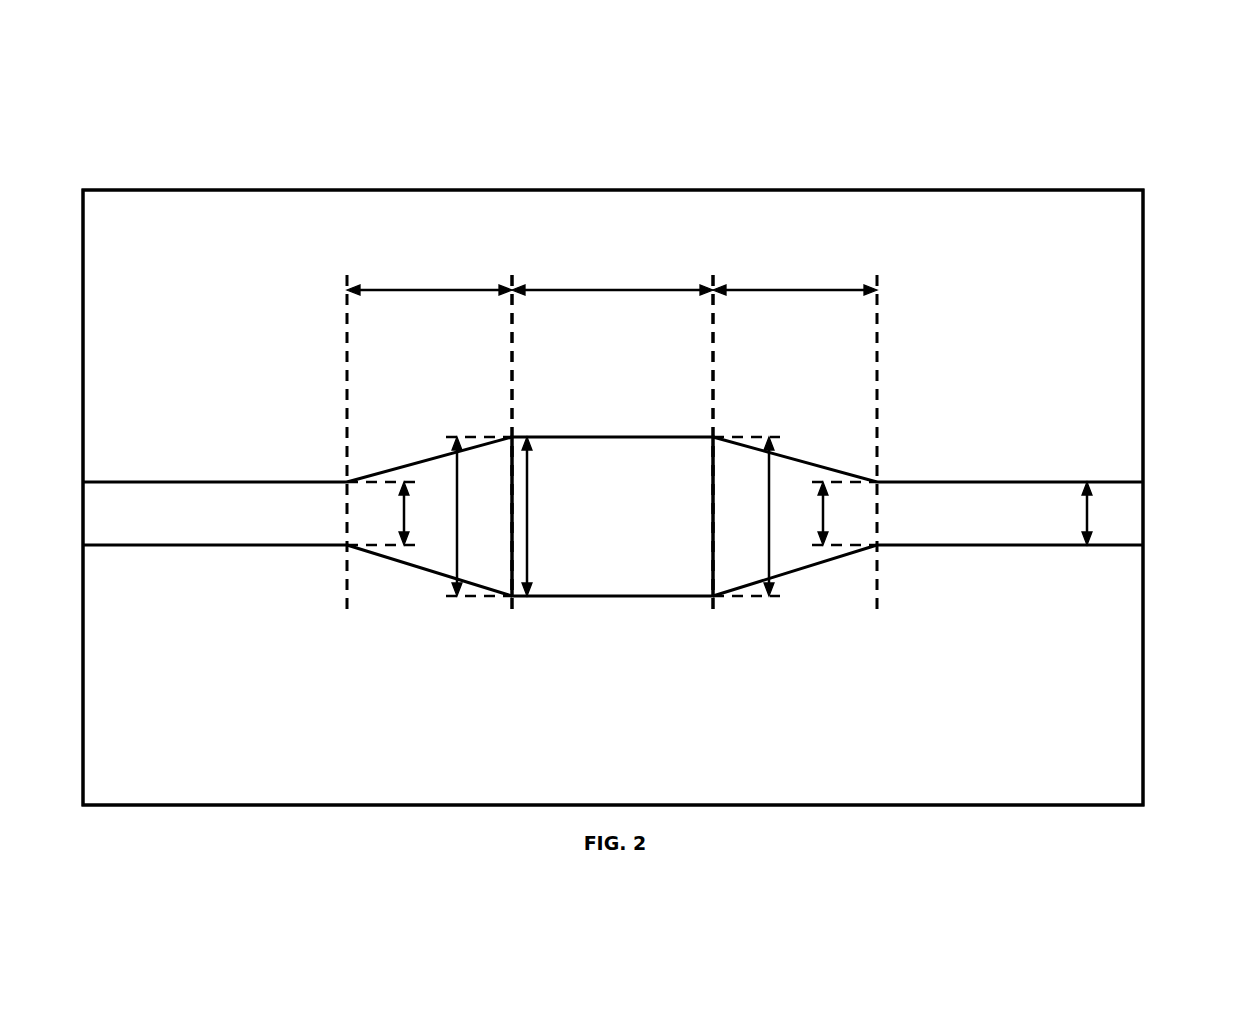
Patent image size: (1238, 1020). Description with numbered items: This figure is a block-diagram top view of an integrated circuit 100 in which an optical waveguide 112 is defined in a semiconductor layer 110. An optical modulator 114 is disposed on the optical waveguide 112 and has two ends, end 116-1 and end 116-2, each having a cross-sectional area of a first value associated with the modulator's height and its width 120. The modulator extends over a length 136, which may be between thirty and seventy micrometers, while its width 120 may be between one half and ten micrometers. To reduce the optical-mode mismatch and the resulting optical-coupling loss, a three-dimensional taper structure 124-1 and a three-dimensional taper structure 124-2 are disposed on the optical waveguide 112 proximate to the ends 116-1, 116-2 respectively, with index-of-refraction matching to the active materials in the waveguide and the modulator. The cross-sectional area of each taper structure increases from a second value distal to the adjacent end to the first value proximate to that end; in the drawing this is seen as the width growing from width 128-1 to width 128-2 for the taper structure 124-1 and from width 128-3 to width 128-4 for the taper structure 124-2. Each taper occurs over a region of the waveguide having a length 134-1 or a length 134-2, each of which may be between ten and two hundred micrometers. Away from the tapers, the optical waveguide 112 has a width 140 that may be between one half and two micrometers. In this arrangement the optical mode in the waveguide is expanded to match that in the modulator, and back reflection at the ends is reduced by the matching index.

The integrated circuit 100 is at (1053, 117).
The semiconductor layer 110 is at (613, 497).
The optical waveguide 112 is at (613, 513).
The optical modulator 114 is at (612, 516).
The end 116-1 is at (507, 438).
The end 116-2 is at (713, 455).
The width 120 is at (528, 547).
The 3-D taper structure 124-1 is at (512, 620).
The 3-D taper structure 124-2 is at (878, 620).
The width 128-1 is at (404, 510).
The width 128-2 is at (457, 493).
The width 128-3 is at (823, 513).
The width 128-4 is at (770, 488).
The length 134-1 is at (468, 288).
The length 134-2 is at (758, 288).
The length 136 is at (577, 288).
The width 140 is at (1085, 517).